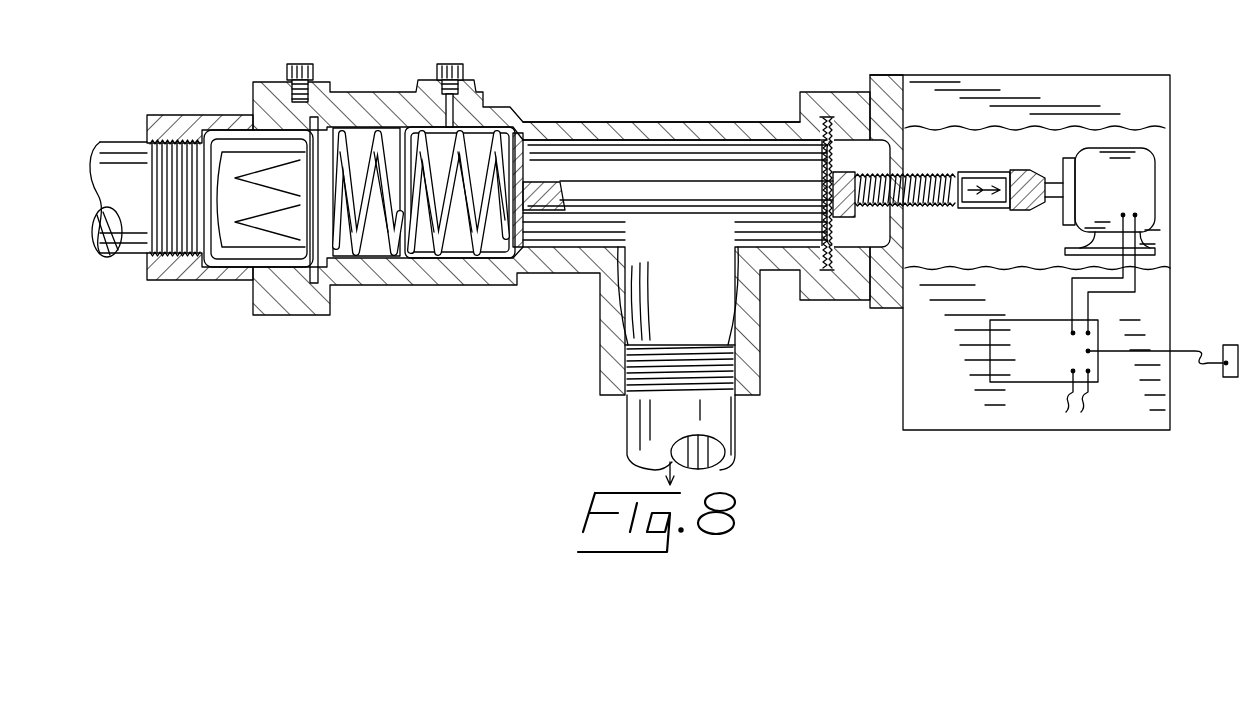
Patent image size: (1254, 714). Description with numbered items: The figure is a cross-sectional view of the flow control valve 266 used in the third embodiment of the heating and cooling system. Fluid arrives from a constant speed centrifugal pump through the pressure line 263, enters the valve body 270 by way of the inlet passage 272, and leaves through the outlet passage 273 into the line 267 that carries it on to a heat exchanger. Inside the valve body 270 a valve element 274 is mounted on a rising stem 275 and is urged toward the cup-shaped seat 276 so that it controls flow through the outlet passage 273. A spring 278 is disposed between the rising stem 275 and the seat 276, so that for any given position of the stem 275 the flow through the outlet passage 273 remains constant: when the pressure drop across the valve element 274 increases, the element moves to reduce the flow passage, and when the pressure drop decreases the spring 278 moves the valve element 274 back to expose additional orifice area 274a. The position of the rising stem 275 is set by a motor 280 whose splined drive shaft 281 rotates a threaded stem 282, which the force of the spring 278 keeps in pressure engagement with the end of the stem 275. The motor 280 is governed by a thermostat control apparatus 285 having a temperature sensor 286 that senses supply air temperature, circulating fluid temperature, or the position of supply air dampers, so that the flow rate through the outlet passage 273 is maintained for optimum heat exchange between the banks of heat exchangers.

The pressure line 263 is at (128, 118).
The flow control valve 266 is at (697, 111).
The line 267 is at (740, 418).
The valve body 270 is at (372, 93).
The inlet passage 272 is at (166, 264).
The outlet passage 273 is at (740, 330).
The valve element 274 is at (282, 130).
The orifice area 274a is at (266, 228).
The rising stem 275 is at (658, 184).
The seat 276 is at (320, 125).
The spring 278 is at (395, 262).
The motor 280 is at (1155, 152).
The splined drive shaft 281 is at (1016, 170).
The threaded stem 282 is at (945, 205).
The thermostat control apparatus 285 is at (1010, 384).
The temperature sensor 286 is at (1245, 322).